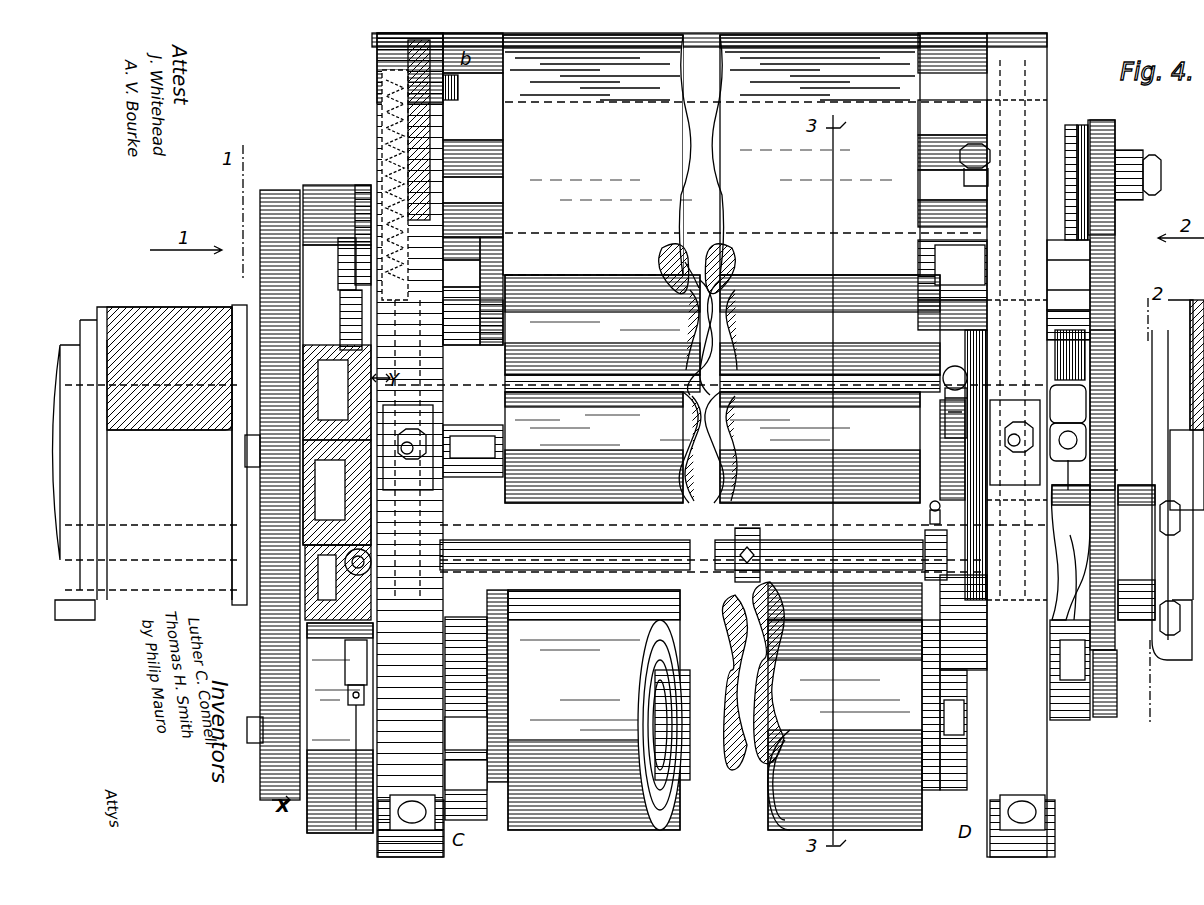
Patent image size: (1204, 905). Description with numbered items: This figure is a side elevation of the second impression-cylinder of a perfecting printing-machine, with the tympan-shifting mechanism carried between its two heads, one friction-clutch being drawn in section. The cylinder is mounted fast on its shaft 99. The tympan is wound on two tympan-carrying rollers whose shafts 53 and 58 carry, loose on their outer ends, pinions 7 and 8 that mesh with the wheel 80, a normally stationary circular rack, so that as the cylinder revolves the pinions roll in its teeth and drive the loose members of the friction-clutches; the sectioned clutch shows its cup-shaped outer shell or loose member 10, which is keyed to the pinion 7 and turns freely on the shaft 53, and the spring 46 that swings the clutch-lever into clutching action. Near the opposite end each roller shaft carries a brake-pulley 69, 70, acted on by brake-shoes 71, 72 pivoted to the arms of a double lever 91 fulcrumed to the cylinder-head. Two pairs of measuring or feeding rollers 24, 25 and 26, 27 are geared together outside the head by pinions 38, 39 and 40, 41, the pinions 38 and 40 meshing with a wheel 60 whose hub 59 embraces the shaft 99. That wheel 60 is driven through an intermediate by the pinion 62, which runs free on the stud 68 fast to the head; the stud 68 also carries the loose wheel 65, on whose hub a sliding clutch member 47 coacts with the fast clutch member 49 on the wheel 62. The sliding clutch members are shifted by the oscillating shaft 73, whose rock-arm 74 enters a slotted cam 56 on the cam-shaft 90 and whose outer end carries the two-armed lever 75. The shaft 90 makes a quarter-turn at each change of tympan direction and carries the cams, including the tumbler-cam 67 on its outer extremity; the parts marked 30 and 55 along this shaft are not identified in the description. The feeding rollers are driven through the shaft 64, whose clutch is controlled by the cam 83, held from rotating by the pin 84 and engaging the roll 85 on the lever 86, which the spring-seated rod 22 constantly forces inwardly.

The pinion 7 is at (262, 766).
The pinion 8 is at (272, 470).
The outer shell or loose member 10 is at (340, 728).
The spring-seated rod 22 is at (396, 74).
The measuring or feeding roller 24 is at (722, 676).
The measuring or feeding roller 25 is at (741, 673).
The measuring or feeding roller 26 is at (722, 335).
The measuring or feeding roller 27 is at (676, 250).
The collar 30 is at (913, 555).
The pinion 38 is at (1112, 652).
The pinion 39 is at (1110, 718).
The pinion 40 is at (1114, 336).
The pinion 41 is at (1114, 243).
The spring 46 is at (376, 646).
The clutch member 47 is at (1071, 128).
The fast clutch member 49 is at (1082, 126).
The shaft 53 is at (476, 705).
The collar 55 is at (762, 530).
The slotted cam 56 is at (1071, 552).
The shaft 58 is at (473, 388).
The hub 59 is at (1116, 404).
The wheel 60 is at (1112, 440).
The pinion 62 is at (1115, 140).
The shaft 64 is at (957, 163).
The wheel 65 is at (1033, 85).
The tumbler-cam 67 is at (1149, 560).
The stud 68 is at (1150, 175).
The brake-pulley 69 is at (953, 730).
The brake-pulley 70 is at (965, 490).
The brake-shoe 71 is at (925, 652).
The brake-shoe 72 is at (929, 514).
The oscillating shaft 73 is at (1057, 364).
The rock-arm 74 is at (1116, 471).
The two-armed lever 75 is at (1068, 275).
The wheel 80 is at (283, 190).
The cam 83 is at (340, 302).
The pin 84 is at (338, 582).
The roll 85 is at (338, 268).
The lever 86 is at (362, 186).
The shaft 90 is at (681, 555).
The double lever 91 is at (968, 392).
The shaft 99 is at (85, 466).